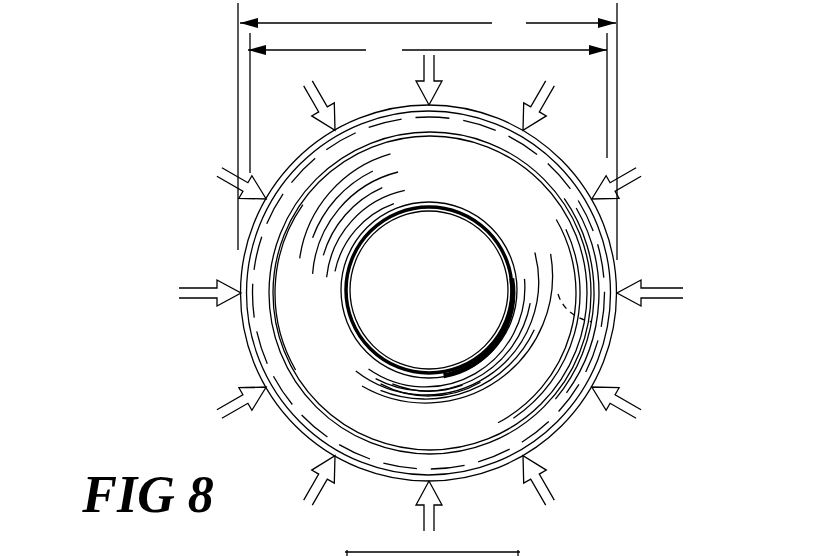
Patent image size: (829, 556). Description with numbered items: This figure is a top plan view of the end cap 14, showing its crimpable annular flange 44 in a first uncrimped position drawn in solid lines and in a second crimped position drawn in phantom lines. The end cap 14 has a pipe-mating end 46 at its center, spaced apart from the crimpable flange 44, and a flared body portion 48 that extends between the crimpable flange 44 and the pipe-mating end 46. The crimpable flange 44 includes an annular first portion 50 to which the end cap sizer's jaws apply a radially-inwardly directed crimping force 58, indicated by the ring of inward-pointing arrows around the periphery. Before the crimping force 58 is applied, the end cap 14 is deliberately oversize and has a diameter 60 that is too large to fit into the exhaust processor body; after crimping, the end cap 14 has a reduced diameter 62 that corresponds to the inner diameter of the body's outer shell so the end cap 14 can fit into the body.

The end cap 14 is at (641, 230).
The crimpable annular flange 44 is at (618, 360).
The pipe-mating end 46 is at (503, 254).
The flared body portion 48 is at (458, 187).
The first portion of crimpable flange 50 is at (646, 330).
The radially-inwardly directed force 58 is at (627, 173).
The diameter before crimping 60 is at (427, 131).
The diameter after crimping 62 is at (427, 103).